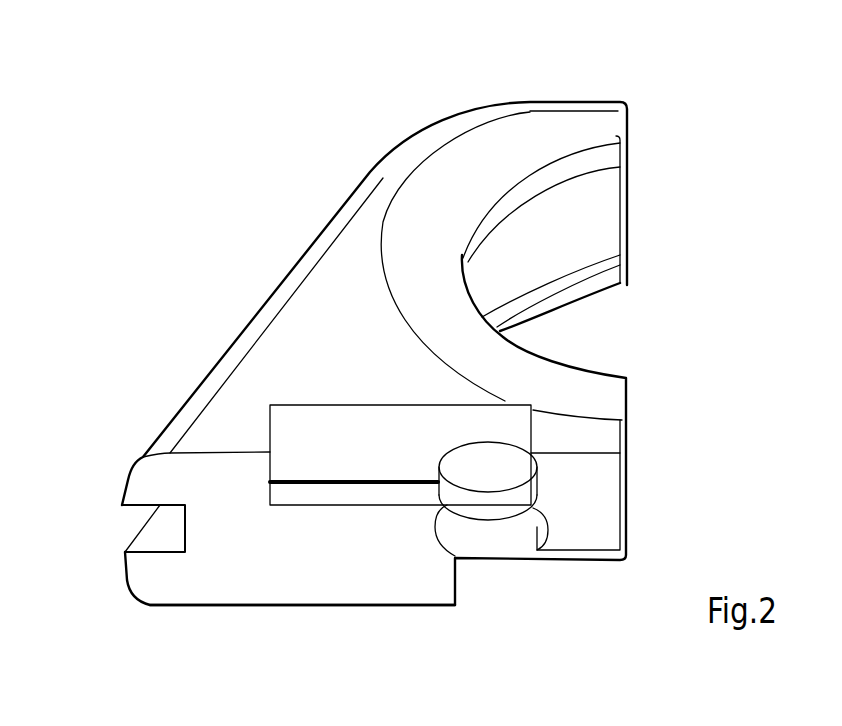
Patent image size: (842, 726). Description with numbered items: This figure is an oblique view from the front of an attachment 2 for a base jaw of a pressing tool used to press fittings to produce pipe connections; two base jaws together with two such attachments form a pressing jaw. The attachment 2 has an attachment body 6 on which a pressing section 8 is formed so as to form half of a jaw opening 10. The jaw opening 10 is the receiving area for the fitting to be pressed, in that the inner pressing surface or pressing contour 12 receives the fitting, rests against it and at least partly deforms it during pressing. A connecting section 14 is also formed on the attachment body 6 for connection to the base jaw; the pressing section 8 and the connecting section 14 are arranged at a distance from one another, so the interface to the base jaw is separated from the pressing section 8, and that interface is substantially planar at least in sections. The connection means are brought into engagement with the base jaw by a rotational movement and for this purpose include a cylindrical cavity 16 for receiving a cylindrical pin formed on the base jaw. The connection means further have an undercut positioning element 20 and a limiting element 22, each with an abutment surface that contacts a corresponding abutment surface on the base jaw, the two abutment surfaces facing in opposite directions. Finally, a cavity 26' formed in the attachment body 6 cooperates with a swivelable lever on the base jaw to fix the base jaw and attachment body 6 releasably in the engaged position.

The attachment 2 is at (387, 357).
The attachment body 6 is at (287, 358).
The pressing section 8 is at (560, 130).
The jaw opening 10 is at (598, 229).
The pressing contour 12 is at (585, 225).
The connecting section 14 is at (208, 425).
The cylindrical cavity 16 is at (488, 482).
The undercut positioning element 20 is at (340, 588).
The limiting element 22 is at (600, 485).
The cavity 26' is at (113, 528).